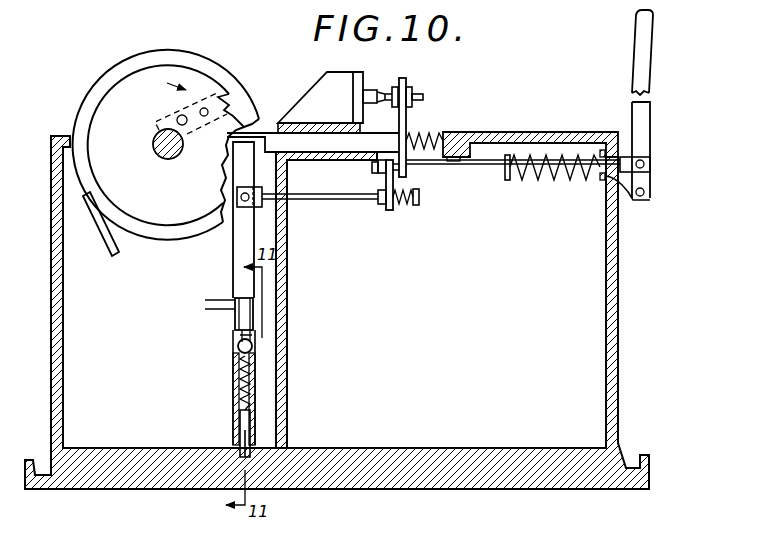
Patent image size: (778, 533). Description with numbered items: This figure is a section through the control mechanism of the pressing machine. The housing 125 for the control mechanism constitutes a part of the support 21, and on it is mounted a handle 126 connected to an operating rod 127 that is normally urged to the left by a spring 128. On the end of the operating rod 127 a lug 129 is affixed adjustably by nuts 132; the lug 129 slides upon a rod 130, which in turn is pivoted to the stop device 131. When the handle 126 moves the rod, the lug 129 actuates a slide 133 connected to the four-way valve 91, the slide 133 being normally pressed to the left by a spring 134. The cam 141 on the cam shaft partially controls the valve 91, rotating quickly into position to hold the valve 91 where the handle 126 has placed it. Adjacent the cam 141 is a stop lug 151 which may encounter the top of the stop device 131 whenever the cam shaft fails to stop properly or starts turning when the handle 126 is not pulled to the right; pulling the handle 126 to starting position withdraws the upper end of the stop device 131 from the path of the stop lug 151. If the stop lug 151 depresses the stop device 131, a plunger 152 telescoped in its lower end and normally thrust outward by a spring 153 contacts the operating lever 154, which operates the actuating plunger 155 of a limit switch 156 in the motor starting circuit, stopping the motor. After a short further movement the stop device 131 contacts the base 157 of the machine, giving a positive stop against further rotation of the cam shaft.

The support 21 is at (621, 318).
The four-way valve 91 is at (357, 83).
The housing 125 is at (612, 207).
The handle 126 is at (643, 70).
The operating rod 127 is at (483, 172).
The spring 128 is at (548, 174).
The lug 129 is at (388, 212).
The rod 130 is at (331, 203).
The stop device 131 is at (238, 256).
The nuts 132 is at (374, 170).
The slide 133 is at (420, 110).
The spring 134 is at (437, 128).
The cam 141 is at (182, 50).
The stop lug 151 is at (228, 103).
The plunger 152 is at (248, 432).
The spring 153 is at (255, 392).
The operating lever 154 is at (253, 347).
The actuating plunger 155 is at (251, 336).
The limit switch 156 is at (248, 310).
The base 157 is at (163, 447).